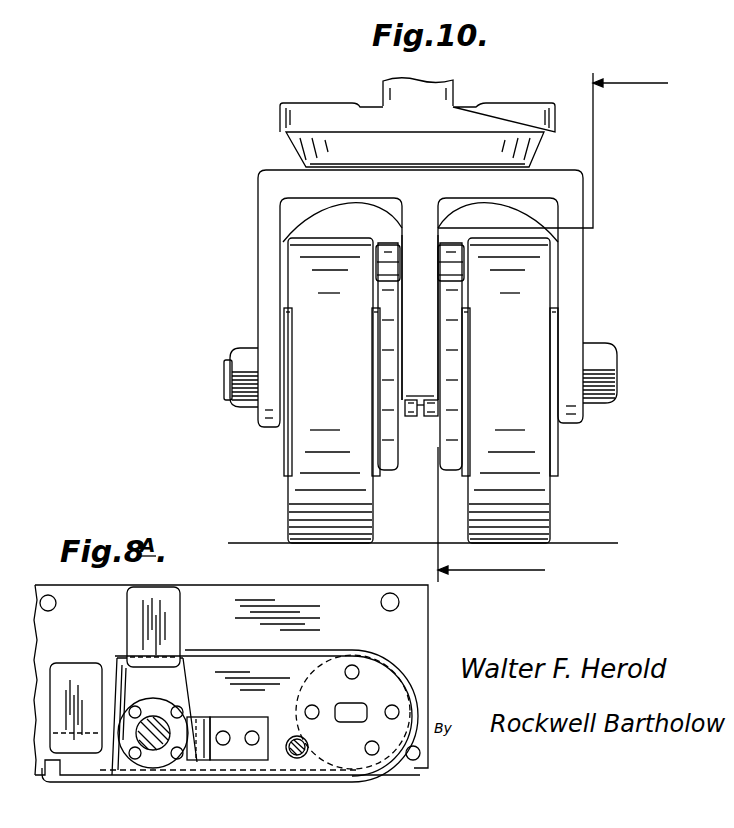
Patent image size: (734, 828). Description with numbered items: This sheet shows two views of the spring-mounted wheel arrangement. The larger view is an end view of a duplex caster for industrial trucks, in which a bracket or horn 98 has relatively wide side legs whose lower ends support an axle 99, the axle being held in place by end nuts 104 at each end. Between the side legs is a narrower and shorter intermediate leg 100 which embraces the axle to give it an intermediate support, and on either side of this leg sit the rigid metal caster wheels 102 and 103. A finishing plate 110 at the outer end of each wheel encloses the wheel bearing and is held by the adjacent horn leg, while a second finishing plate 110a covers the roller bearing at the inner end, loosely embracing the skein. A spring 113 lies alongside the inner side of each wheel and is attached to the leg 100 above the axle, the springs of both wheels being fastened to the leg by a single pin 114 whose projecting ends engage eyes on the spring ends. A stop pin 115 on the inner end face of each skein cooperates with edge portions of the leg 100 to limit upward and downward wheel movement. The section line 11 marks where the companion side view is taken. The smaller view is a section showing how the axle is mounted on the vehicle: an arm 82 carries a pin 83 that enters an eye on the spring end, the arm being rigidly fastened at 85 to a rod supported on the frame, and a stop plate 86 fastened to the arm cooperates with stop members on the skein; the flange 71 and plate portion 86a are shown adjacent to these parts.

In FIG. 10, the section line 11— 11 is at (645, 83).
In FIG. 10, the horn 98 is at (262, 224).
In FIG. 10, the axle 99 is at (226, 380).
In FIG. 10, the intermediate leg 100 is at (440, 334).
In FIG. 10, the caster wheel 102 is at (345, 360).
In FIG. 10, the caster wheel 103 is at (522, 362).
In FIG. 10, the end nut 104 is at (243, 355).
In FIG. 10, the finishing plate 110 is at (284, 458).
In FIG. 10, the finishing plate 110a is at (482, 328).
In FIG. 10, the spring 113 is at (386, 383).
In FIG. 10, the pin 114 is at (414, 266).
In FIG. 10, the stop pin 115 is at (430, 416).
In FIG. 8A, the shaft flange 71 is at (153, 720).
In FIG. 8A, the arm 82 is at (355, 648).
In FIG. 8A, the pin 83 is at (309, 745).
In FIG. 8A, the fastening location 85 is at (358, 711).
In FIG. 8A, the stop plate 86 is at (245, 724).
In FIG. 8A, the bracket plate 86a is at (197, 718).